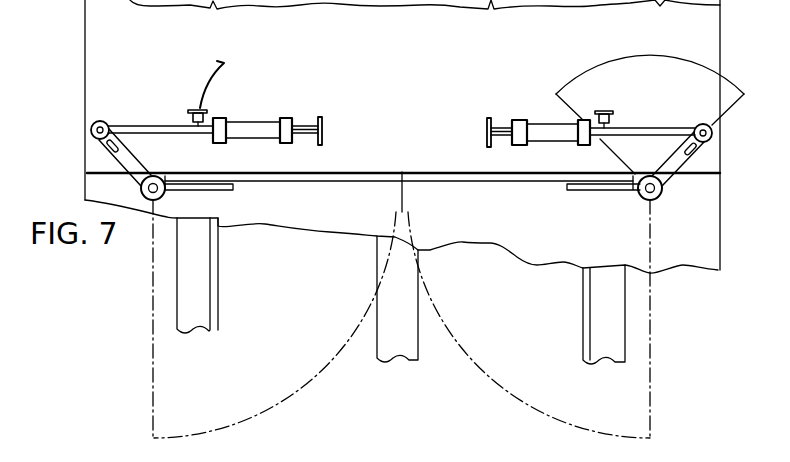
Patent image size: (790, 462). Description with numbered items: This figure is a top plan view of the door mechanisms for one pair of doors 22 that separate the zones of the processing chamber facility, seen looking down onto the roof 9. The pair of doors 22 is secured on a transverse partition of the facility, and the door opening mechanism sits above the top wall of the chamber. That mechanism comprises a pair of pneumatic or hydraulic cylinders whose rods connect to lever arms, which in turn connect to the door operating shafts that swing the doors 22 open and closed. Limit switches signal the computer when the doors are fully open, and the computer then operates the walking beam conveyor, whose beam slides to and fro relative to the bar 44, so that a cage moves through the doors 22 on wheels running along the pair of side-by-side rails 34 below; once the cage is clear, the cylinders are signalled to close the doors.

The roof 9 is at (394, 99).
The doors 22 is at (302, 181).
The rails 34 is at (218, 300).
The bar 44 is at (401, 306).